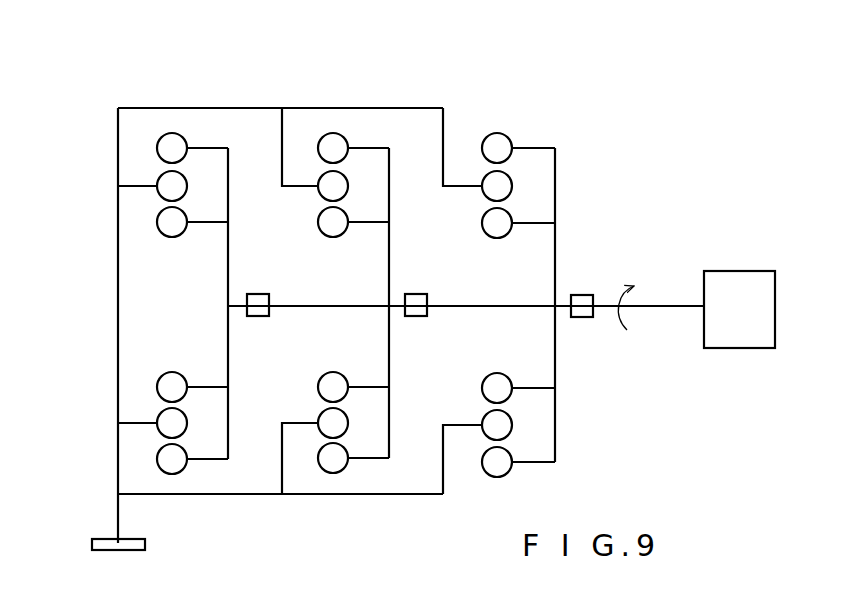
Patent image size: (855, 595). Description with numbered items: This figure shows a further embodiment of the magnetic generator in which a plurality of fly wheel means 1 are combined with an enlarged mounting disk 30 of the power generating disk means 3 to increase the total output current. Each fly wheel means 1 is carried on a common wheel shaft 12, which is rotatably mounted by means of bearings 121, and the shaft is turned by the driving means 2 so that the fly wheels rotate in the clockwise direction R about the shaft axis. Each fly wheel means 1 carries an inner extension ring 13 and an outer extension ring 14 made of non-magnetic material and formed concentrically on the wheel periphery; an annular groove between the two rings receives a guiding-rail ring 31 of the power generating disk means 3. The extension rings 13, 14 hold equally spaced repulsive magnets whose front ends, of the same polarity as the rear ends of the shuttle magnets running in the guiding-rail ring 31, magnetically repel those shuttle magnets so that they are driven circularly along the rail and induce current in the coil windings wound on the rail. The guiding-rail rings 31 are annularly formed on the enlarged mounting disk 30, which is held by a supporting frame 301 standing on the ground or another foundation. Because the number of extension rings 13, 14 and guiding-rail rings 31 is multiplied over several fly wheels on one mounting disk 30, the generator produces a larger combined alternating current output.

The fly wheel means 1 is at (232, 275).
The driving means 2 is at (752, 270).
The power generating disk means 3 is at (114, 188).
The wheel shaft 12 is at (236, 308).
The inner extension ring 13 is at (162, 233).
The outer extension ring 14 is at (171, 133).
The mounting disk 30 is at (264, 108).
The guiding-rail ring 31 is at (159, 176).
The bearings 121 is at (270, 313).
The supporting frame 301 is at (100, 538).
The clockwise rotation R is at (638, 286).